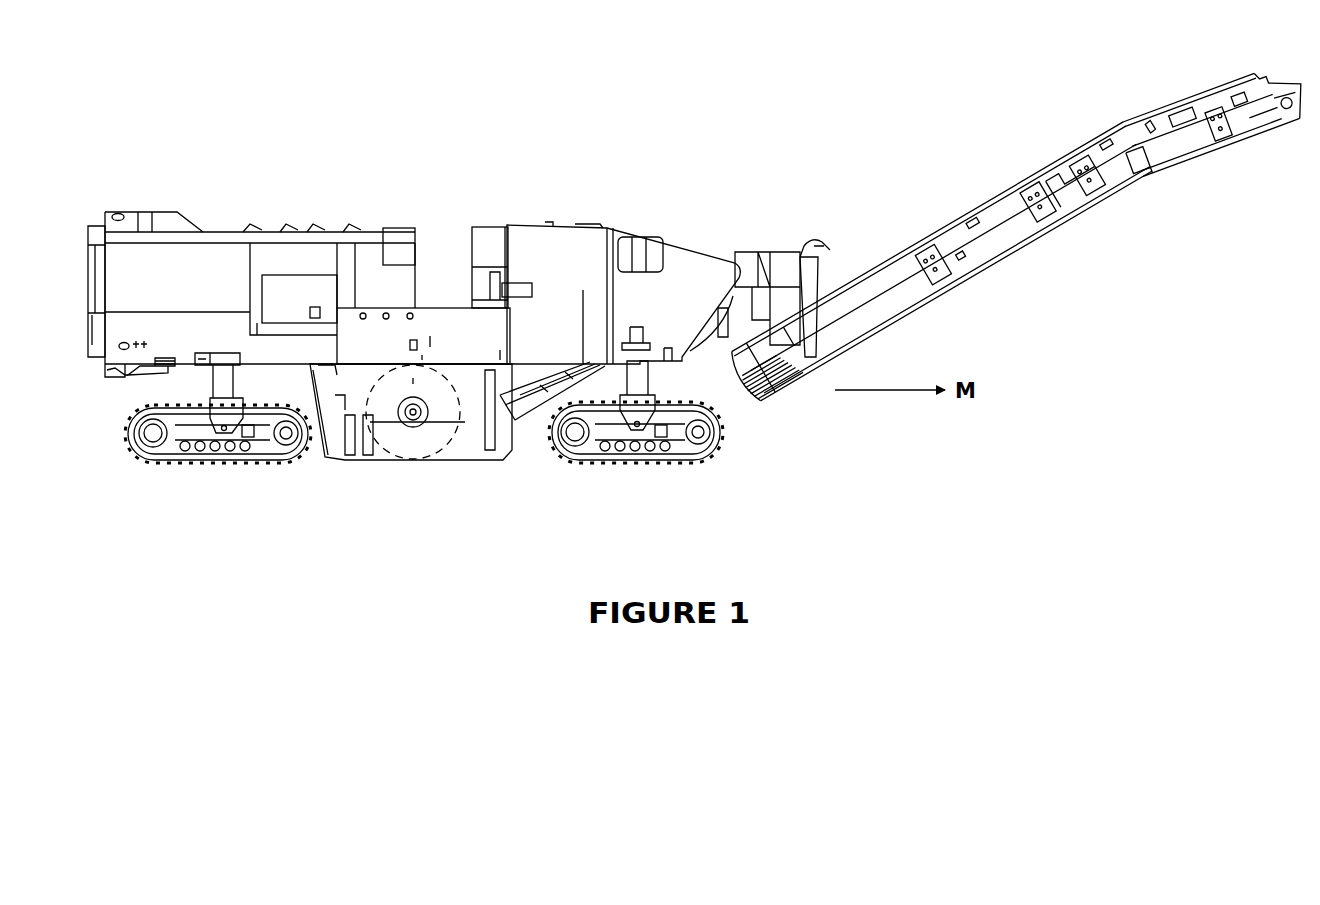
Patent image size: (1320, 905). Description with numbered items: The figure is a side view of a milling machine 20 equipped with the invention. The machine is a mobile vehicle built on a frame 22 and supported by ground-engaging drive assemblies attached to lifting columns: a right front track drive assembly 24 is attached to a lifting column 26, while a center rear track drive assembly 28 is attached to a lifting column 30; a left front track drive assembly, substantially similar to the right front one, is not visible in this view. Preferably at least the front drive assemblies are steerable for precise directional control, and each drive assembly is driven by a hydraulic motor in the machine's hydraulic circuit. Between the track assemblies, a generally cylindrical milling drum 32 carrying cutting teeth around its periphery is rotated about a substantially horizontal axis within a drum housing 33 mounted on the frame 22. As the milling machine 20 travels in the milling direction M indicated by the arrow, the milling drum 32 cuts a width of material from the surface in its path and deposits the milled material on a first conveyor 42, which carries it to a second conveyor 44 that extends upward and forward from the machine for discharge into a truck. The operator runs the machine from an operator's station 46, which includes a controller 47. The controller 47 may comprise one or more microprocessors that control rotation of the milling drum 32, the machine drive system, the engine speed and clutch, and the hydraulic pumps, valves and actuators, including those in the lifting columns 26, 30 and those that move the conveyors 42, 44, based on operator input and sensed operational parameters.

The milling machine 20 is at (648, 170).
The frame 22 is at (150, 375).
The right front track drive assembly 24 is at (720, 450).
The lifting column 26 is at (650, 380).
The center rear track drive assembly 28 is at (125, 455).
The lifting column 30 is at (240, 390).
The milling drum 32 is at (460, 437).
The drum housing 33 is at (378, 465).
The first conveyor 42 is at (568, 378).
The second conveyor 44 is at (1030, 250).
The operator's station 46 is at (462, 268).
The controller 47 is at (535, 288).